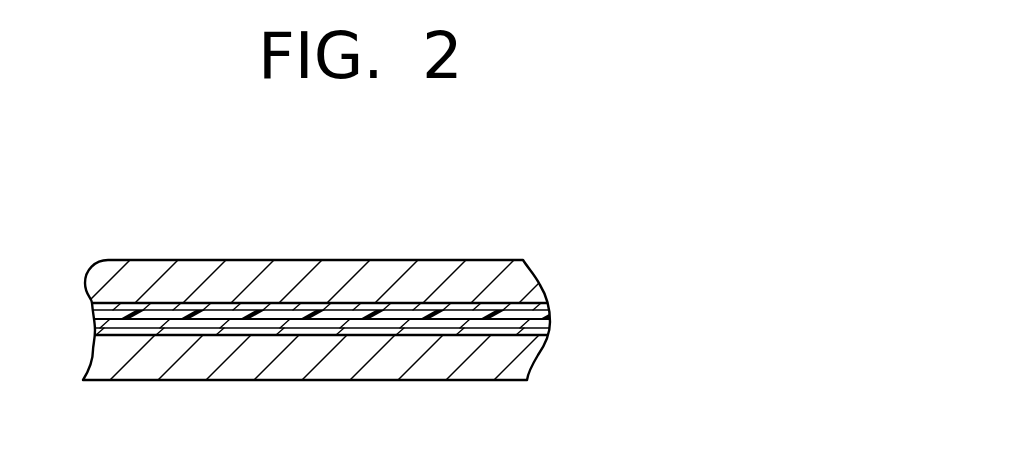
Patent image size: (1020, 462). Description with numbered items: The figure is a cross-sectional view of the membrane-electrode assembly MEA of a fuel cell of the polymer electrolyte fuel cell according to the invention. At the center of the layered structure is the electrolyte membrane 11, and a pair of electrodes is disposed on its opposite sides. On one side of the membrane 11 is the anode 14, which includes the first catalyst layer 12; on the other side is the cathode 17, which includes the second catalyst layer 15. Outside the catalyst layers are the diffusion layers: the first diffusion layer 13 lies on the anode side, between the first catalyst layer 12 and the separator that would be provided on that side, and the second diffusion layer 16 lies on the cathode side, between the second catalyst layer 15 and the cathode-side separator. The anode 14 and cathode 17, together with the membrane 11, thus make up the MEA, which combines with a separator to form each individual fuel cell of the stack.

The electrolyte membrane 11 is at (537, 322).
The first catalyst layer 12 is at (505, 355).
The first diffusion layer 13 is at (538, 343).
The anode 14 is at (409, 385).
The second catalyst layer 15 is at (364, 289).
The second diffusion layer 16 is at (520, 282).
The cathode 17 is at (411, 261).
The membrane-electrode assembly MEA is at (462, 327).